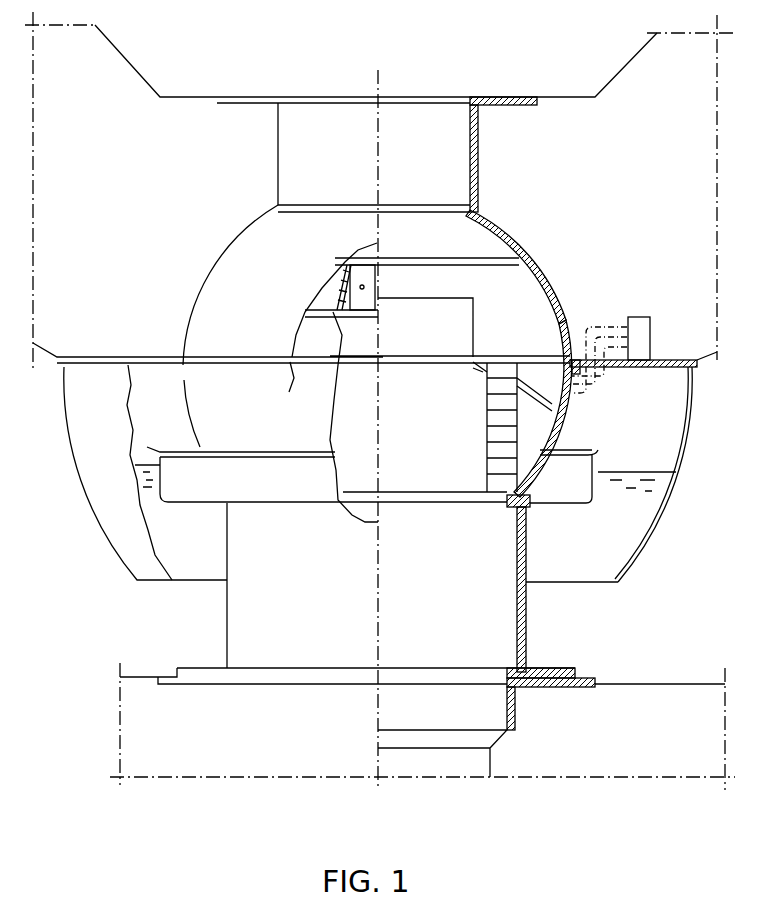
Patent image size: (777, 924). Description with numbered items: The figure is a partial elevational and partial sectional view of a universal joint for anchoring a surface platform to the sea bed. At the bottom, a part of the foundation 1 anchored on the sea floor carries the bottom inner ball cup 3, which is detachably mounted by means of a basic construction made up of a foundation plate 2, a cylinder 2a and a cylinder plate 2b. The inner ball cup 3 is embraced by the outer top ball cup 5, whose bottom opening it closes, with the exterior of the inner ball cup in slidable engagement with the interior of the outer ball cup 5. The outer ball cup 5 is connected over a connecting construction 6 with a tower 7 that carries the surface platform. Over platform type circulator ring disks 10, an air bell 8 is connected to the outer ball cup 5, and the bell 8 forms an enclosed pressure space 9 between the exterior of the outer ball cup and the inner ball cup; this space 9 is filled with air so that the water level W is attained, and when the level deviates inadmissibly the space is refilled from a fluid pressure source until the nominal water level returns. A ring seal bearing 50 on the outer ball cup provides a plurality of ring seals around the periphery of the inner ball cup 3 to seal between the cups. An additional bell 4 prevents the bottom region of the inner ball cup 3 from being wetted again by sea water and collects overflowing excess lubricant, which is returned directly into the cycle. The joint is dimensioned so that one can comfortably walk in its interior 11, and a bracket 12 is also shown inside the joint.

The foundation 1 is at (668, 772).
The foundation plate 2 is at (215, 667).
The cylinder 2a is at (515, 602).
The cylinder plate 2b is at (507, 503).
The inner ball cup 3 is at (558, 421).
The additional bell 4 is at (584, 510).
The outer top ball cup 5 is at (522, 248).
The connecting construction 6 is at (479, 168).
The tower 7 is at (583, 88).
The air bell 8 is at (683, 436).
The pressure space 9 is at (666, 400).
The circulator ring disks 10 is at (676, 358).
The interior 11 is at (426, 430).
The bracket 12 is at (355, 305).
The ring seal bearing 50 is at (580, 360).
The water level W is at (623, 466).